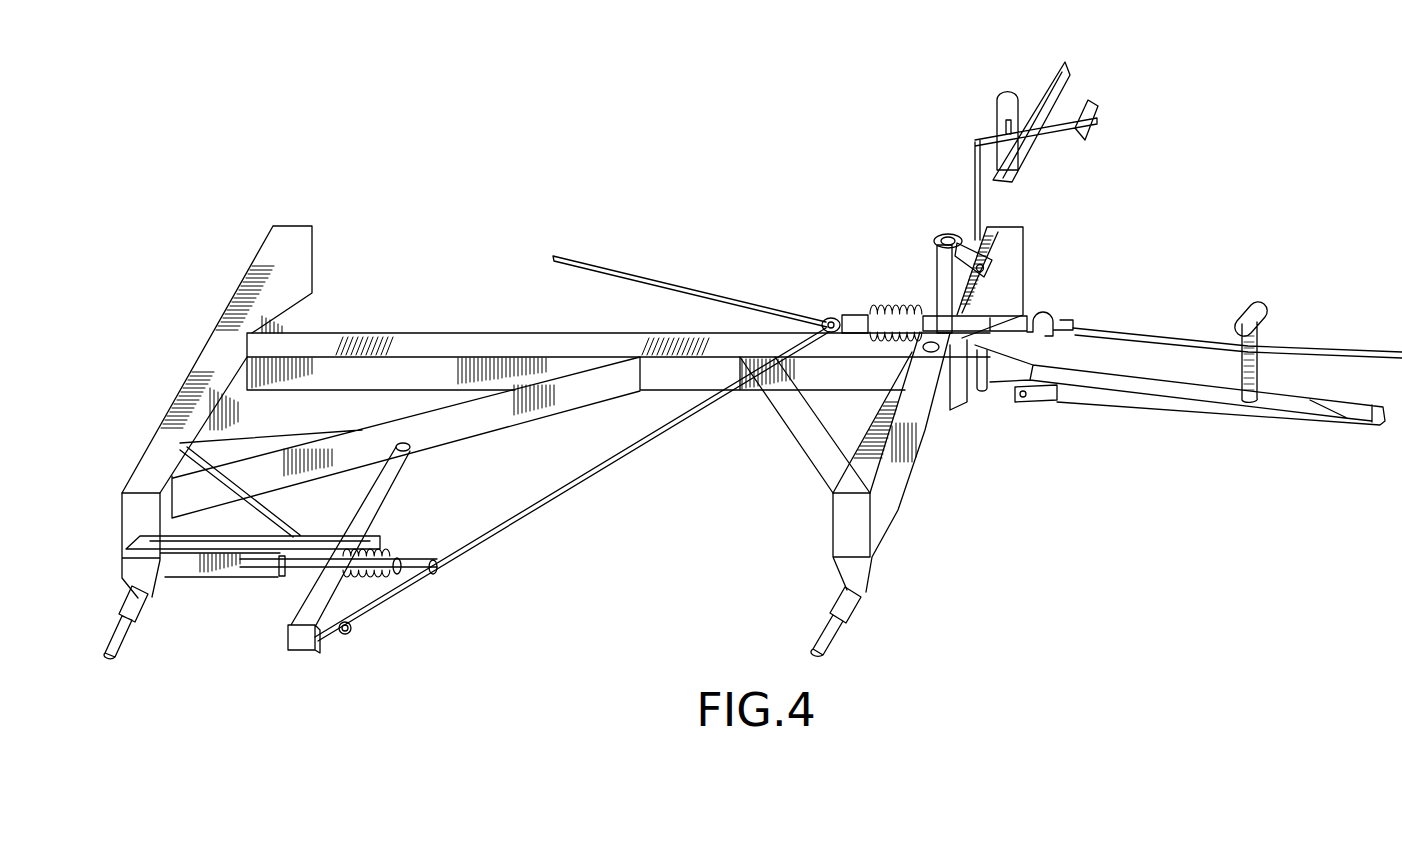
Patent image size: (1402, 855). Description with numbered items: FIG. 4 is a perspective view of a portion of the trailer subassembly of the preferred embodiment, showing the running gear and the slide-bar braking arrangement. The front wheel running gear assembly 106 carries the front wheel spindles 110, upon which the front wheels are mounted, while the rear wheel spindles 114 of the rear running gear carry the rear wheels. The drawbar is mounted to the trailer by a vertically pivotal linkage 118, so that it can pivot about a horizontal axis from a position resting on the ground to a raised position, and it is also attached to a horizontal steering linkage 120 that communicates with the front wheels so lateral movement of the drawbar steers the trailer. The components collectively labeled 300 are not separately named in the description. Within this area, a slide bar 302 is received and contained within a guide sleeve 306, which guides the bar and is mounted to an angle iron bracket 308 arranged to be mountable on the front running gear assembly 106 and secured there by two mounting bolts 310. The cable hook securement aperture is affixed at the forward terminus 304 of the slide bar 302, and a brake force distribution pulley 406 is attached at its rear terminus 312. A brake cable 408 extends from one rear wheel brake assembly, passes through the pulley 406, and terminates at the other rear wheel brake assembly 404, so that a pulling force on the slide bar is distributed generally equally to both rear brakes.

The front wheel running gear assembly 106 is at (833, 523).
The front wheel spindles 110 is at (860, 617).
The rear wheel spindles 114 is at (142, 617).
The vertically pivotal linkage 118 is at (1040, 405).
The horizontal steering linkage 120 is at (1018, 375).
The spring assembly 300 is at (887, 297).
The slide bar 302 is at (1020, 298).
The forward terminus 304 is at (1027, 318).
The guide sleeve 306 is at (970, 312).
The angle iron bracket 308 is at (926, 348).
The mounting bolts 310 is at (917, 343).
The rear terminus 312 is at (853, 312).
The rear wheel brake assembly 404 is at (405, 542).
The brake force distribution pulley 406 is at (826, 320).
The brake cable 408 is at (625, 270).